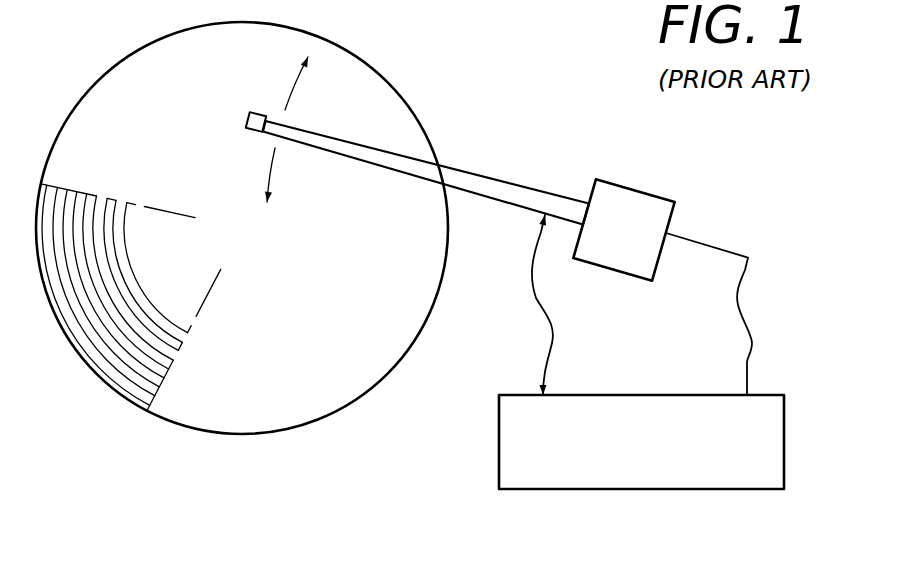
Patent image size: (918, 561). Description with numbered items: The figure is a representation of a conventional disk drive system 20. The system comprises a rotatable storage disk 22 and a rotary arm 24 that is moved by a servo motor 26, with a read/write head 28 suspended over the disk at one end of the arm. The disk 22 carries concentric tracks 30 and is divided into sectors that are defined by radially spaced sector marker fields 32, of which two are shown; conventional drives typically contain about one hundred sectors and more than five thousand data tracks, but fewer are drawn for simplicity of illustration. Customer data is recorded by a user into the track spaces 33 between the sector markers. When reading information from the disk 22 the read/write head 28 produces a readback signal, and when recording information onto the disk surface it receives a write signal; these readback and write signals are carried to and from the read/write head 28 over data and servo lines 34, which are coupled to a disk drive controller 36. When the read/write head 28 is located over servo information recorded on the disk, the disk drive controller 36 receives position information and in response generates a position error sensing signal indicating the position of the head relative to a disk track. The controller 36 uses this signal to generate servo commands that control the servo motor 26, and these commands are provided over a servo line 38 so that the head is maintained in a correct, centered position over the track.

The disk drive system 20 is at (484, 77).
The rotatable storage disk 22 is at (128, 52).
The rotary arm 24 is at (473, 174).
The servo motor 26 is at (635, 188).
The read/write head 28 is at (262, 112).
The concentric tracks 30 is at (74, 162).
The sector marker fields 32 is at (166, 208).
The track spaces 33 is at (126, 266).
The data and servo lines 34 is at (553, 325).
The disk drive controller 36 is at (499, 444).
The servo line 38 is at (705, 244).